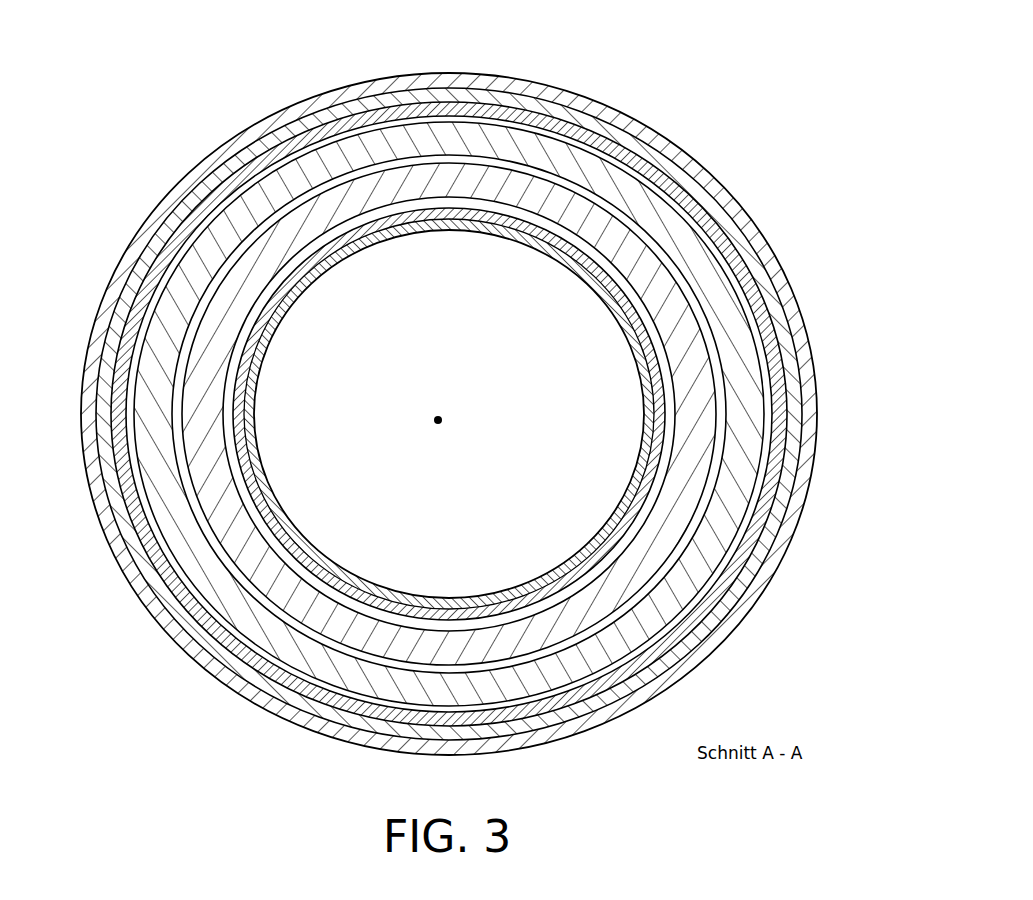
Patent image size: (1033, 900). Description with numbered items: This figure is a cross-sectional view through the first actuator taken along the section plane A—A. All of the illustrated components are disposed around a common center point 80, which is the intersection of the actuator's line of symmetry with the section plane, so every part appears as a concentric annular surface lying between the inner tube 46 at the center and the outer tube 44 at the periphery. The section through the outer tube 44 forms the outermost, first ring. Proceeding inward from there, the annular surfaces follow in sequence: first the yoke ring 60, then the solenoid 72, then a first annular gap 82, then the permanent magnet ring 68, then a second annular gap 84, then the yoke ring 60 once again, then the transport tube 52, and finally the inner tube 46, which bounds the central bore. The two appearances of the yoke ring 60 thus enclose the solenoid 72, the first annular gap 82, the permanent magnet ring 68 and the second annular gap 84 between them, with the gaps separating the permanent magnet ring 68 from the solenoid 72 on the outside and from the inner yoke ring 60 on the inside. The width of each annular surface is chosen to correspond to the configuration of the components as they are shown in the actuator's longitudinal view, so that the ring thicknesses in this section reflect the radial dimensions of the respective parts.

The outer tube 44 is at (780, 268).
The inner tube 46 is at (327, 233).
The transport tube 52 is at (453, 198).
The yoke ring 60 is at (537, 195).
The permanent magnet ring 68 is at (110, 362).
The solenoid 72 is at (780, 418).
The common center point 80 is at (438, 420).
The first annular gap 82 is at (207, 257).
The second annular gap 84 is at (203, 527).